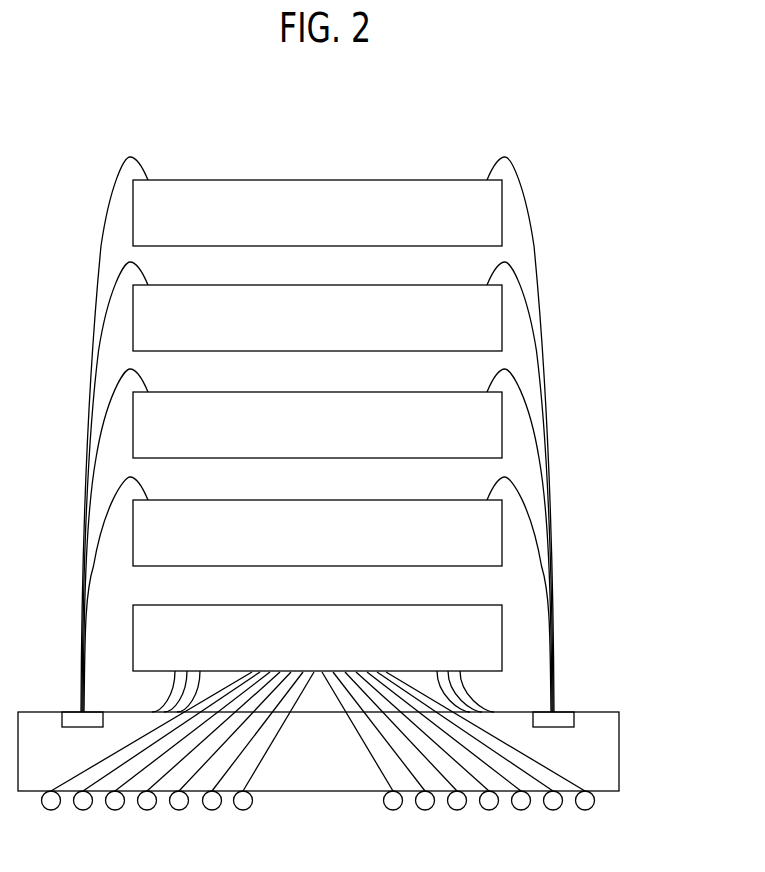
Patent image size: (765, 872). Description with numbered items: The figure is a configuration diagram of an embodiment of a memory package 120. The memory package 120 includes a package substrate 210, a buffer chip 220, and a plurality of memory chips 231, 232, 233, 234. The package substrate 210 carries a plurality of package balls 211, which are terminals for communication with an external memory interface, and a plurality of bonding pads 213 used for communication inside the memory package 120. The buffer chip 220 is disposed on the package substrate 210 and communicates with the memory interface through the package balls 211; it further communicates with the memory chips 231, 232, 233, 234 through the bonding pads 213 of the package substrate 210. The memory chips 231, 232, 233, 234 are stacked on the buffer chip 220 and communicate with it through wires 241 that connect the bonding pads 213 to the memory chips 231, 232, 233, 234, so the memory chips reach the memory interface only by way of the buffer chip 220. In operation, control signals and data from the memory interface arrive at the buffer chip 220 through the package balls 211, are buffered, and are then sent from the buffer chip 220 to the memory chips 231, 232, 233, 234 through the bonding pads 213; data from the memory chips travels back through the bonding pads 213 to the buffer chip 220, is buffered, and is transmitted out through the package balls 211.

The memory package 120 is at (31, 120).
The package substrate 210 is at (619, 750).
The package balls 211 is at (596, 802).
The bonding pads 213 is at (568, 711).
The buffer chip 220 is at (455, 603).
The memory chip 231 is at (405, 498).
The memory chip 232 is at (405, 390).
The memory chip 233 is at (405, 283).
The memory chip 234 is at (405, 178).
The wires 241 is at (550, 453).